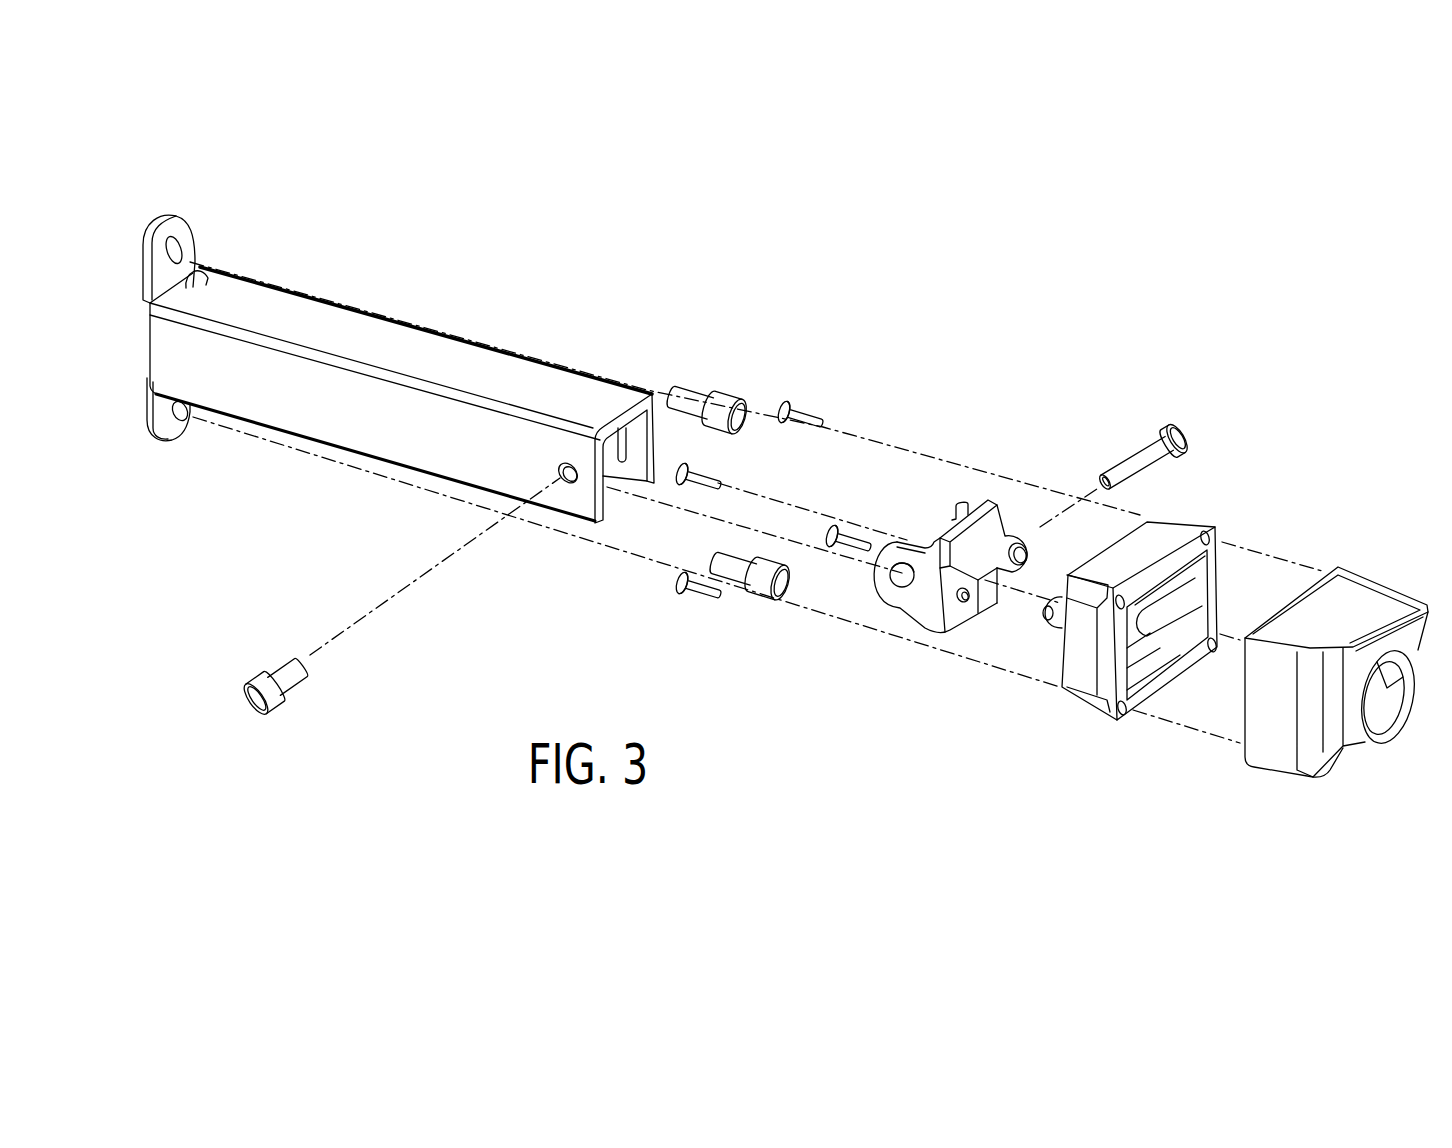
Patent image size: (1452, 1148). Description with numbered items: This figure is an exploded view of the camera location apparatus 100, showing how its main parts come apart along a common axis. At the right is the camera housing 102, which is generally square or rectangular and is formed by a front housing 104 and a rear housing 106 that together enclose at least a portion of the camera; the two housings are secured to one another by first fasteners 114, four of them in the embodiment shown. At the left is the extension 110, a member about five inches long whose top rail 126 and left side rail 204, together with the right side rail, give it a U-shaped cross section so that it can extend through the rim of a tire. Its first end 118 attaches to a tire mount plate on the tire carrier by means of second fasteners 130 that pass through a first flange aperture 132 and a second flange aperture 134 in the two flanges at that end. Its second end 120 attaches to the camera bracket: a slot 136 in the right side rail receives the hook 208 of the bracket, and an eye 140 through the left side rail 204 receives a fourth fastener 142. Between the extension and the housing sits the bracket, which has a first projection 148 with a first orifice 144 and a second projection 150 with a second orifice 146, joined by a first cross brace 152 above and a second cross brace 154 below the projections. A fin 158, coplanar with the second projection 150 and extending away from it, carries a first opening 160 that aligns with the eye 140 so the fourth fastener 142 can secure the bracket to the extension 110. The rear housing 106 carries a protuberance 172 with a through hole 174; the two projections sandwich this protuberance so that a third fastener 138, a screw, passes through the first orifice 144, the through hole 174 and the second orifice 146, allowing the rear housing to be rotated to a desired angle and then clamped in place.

The camera location apparatus 100 is at (778, 254).
The camera housing 102 is at (1013, 723).
The front housing 104 is at (1368, 578).
The rear housing 106 is at (1180, 524).
The extension 110 is at (372, 309).
The first fastener 114 is at (806, 410).
The first end 118 is at (207, 272).
The second end 120 is at (598, 430).
The top rail 126 is at (468, 358).
The second fastener 130 is at (763, 600).
The first flange aperture 132 is at (178, 252).
The second flange aperture 134 is at (183, 423).
The slot 136 is at (623, 466).
The third fastener 138 is at (1185, 424).
The eye 140 is at (567, 485).
The fourth fastener 142 is at (297, 687).
The first orifice 144 is at (1040, 533).
The second orifice 146 is at (960, 606).
The first projection 148 is at (1007, 543).
The second projection 150 is at (965, 600).
The first cross brace 152 is at (948, 535).
The second cross brace 154 is at (990, 600).
The fin 158 is at (903, 600).
The first opening 160 is at (880, 578).
The protuberance 172 is at (1042, 608).
The through hole 174 is at (1060, 615).
The left side rail 204 is at (354, 423).
The hook 208 is at (967, 504).